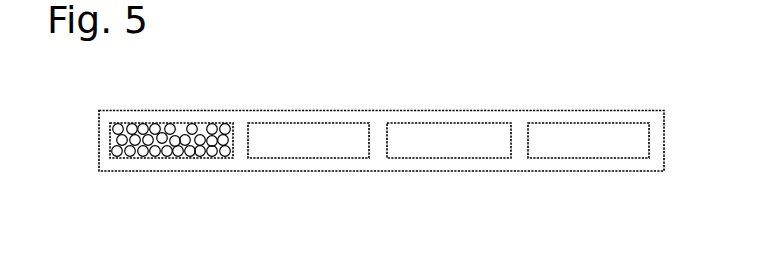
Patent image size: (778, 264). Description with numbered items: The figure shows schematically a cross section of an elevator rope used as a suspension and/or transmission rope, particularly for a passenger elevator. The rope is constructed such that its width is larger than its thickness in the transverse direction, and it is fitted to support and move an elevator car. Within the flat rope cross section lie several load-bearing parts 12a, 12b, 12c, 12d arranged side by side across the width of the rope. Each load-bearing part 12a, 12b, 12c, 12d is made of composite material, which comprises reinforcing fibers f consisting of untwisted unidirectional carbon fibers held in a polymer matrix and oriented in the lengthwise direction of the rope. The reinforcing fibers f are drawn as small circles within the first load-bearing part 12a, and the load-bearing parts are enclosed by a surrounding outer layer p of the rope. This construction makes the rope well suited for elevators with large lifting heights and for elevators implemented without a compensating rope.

The load-bearing part 12a is at (171, 150).
The load-bearing part 12b is at (308, 130).
The load-bearing part 12c is at (437, 130).
The load-bearing part 12d is at (563, 131).
The reinforcing fibers f is at (192, 152).
The package / housing p is at (379, 165).